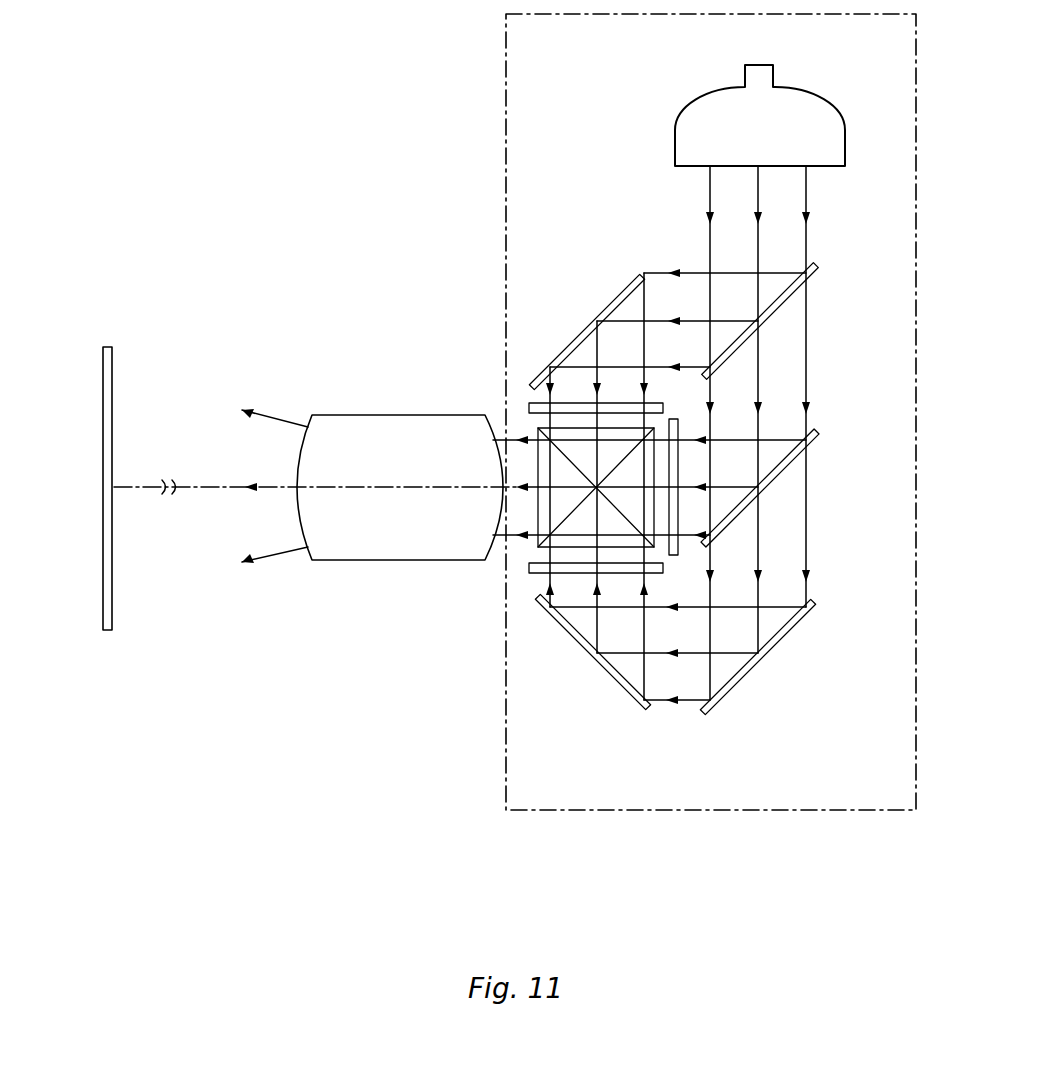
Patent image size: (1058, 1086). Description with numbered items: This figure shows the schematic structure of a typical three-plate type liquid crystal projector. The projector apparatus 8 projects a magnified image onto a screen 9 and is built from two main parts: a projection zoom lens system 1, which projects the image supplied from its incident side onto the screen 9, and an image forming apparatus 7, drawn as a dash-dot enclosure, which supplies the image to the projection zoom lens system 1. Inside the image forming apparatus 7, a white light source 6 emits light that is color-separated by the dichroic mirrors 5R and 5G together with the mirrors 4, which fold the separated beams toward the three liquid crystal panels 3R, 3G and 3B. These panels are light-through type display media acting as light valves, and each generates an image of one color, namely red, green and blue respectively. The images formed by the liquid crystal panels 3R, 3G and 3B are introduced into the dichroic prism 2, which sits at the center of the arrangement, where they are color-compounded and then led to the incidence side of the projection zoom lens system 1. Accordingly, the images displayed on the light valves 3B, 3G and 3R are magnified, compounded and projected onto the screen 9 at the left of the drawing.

The projection zoom lens system 1 is at (397, 545).
The dichroic prism 2 is at (545, 527).
The red liquid crystal panel 3R is at (535, 400).
The green liquid crystal panel 3G is at (675, 413).
The blue liquid crystal panel 3B is at (530, 577).
The mirror 4 is at (590, 312).
The dichroic mirror 5R is at (812, 268).
The dichroic mirror 5G is at (815, 433).
The white light source 6 is at (803, 123).
The image forming apparatus 7 is at (900, 507).
The projector apparatus 8 is at (413, 648).
The screen 9 is at (112, 573).